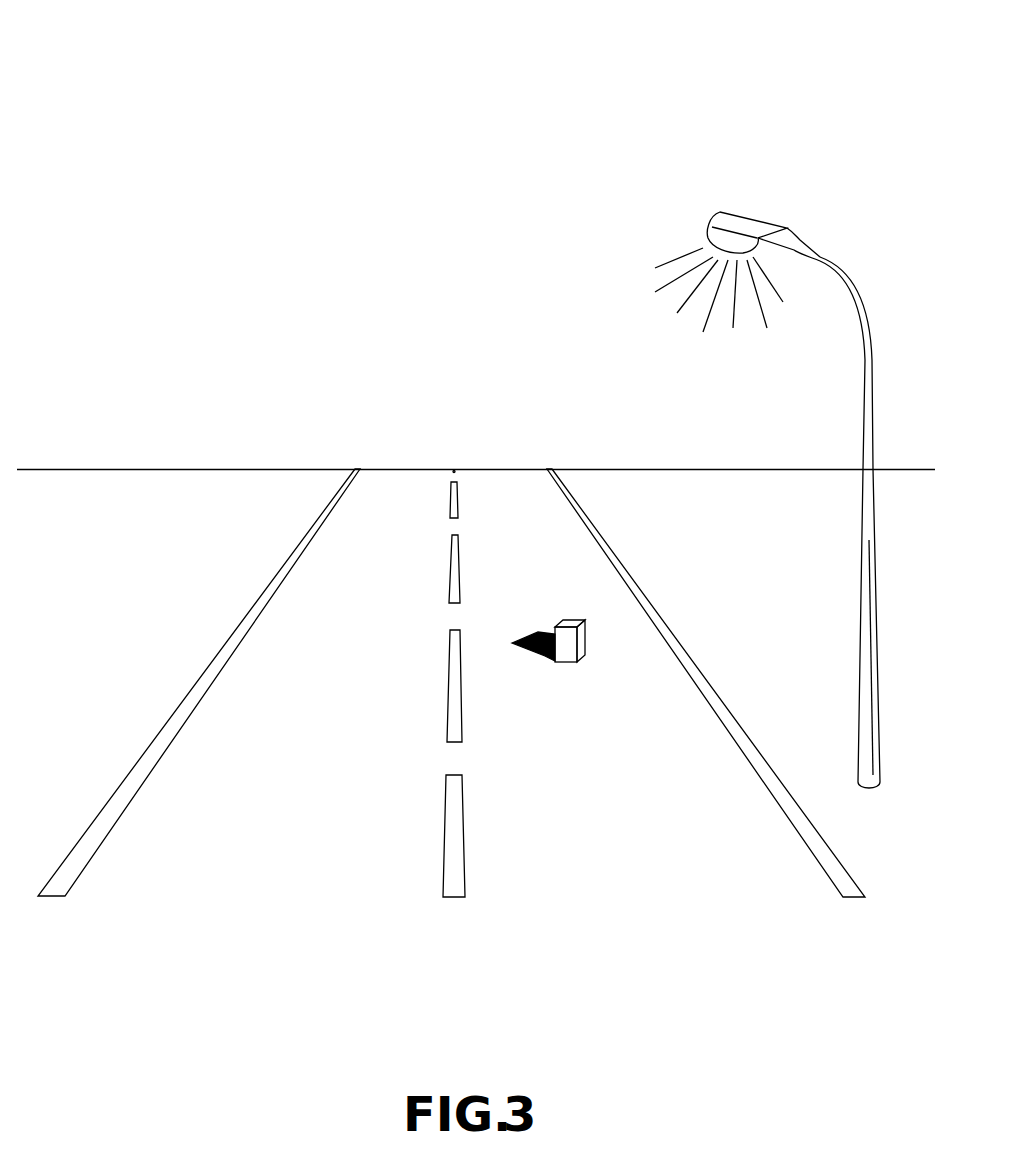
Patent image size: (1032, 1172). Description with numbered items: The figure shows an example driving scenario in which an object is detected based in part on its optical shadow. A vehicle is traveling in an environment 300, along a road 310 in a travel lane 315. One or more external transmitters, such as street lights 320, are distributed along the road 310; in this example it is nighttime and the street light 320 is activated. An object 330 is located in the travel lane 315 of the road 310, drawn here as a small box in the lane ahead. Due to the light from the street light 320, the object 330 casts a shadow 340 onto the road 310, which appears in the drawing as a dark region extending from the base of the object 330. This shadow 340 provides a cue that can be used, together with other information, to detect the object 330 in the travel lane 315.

The environment 300 is at (266, 138).
The road 310 is at (862, 880).
The travel lane 315 is at (630, 846).
The street light 320 is at (813, 342).
The object 330 is at (586, 642).
The shadow 340 is at (533, 633).